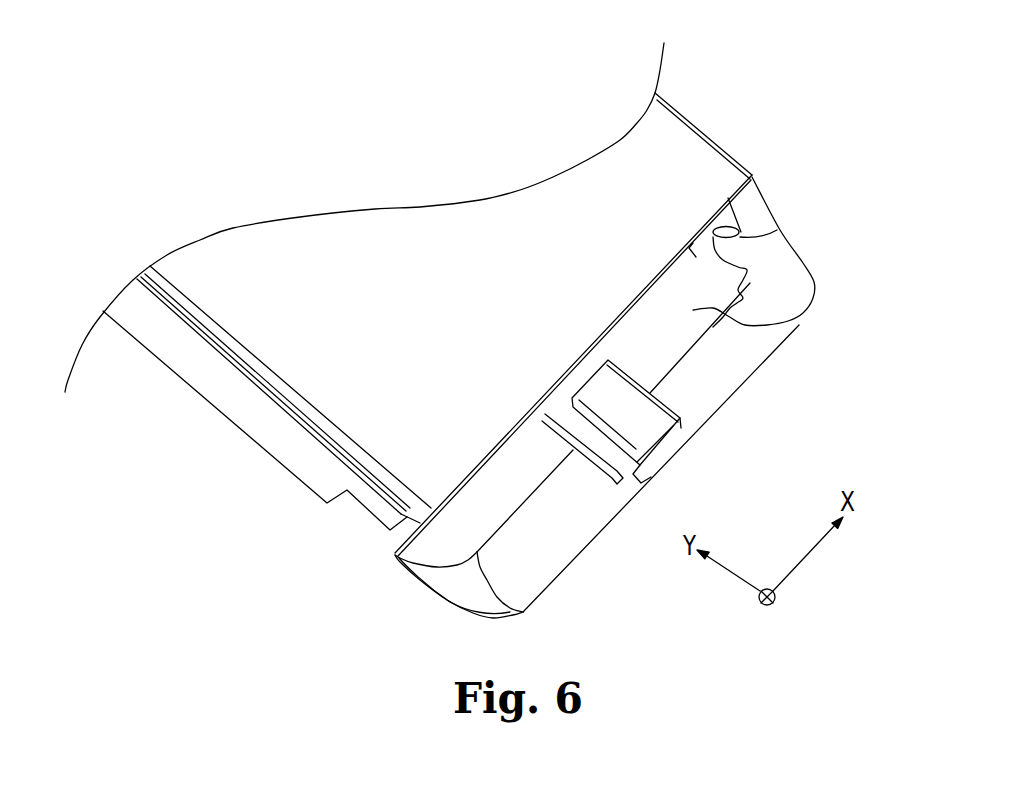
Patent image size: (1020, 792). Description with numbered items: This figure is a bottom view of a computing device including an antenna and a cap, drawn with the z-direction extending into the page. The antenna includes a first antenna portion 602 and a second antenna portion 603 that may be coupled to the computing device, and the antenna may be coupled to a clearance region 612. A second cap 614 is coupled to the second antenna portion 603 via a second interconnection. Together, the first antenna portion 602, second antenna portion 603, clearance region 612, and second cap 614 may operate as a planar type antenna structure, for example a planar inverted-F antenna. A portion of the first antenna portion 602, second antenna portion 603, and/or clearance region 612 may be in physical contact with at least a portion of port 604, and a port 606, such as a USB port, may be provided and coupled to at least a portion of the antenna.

The first antenna portion 602 is at (693, 243).
The second antenna portion 603 is at (722, 323).
The port 604 is at (637, 303).
The port 606 is at (657, 425).
The clearance region 612 is at (576, 373).
The second cap 614 is at (553, 541).